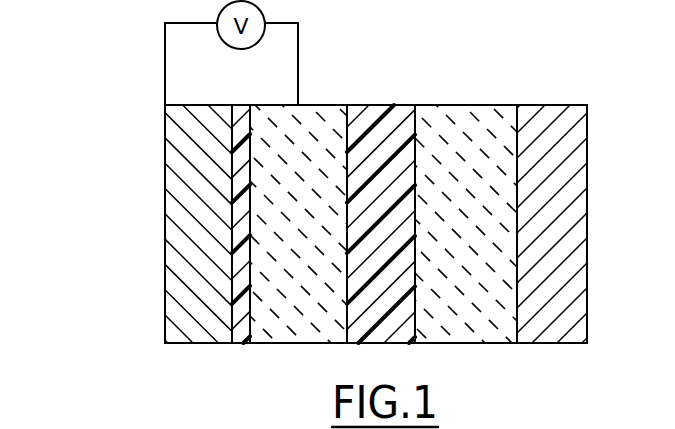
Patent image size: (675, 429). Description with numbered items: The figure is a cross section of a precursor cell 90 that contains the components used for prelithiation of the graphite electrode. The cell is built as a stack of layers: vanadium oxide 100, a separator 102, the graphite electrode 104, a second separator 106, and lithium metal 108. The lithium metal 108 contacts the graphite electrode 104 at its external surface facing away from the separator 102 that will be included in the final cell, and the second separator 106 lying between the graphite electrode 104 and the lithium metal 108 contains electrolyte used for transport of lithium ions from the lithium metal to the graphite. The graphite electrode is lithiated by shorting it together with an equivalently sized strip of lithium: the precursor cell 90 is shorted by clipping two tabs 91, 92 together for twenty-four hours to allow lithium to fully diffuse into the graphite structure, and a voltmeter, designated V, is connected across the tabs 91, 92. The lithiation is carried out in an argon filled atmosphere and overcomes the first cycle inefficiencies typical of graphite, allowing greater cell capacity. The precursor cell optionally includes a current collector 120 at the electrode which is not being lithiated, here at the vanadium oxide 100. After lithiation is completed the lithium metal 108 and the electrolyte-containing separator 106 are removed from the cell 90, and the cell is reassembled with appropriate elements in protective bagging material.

The precursor cell 90 is at (116, 210).
The tab 91 is at (163, 65).
The tab 92 is at (298, 73).
The vanadium oxide 100 is at (493, 345).
The separator 102 is at (393, 345).
The graphite electrode 104 is at (294, 345).
The second separator 106 is at (242, 345).
The lithium metal 108 is at (167, 322).
The current collector 120 is at (560, 343).